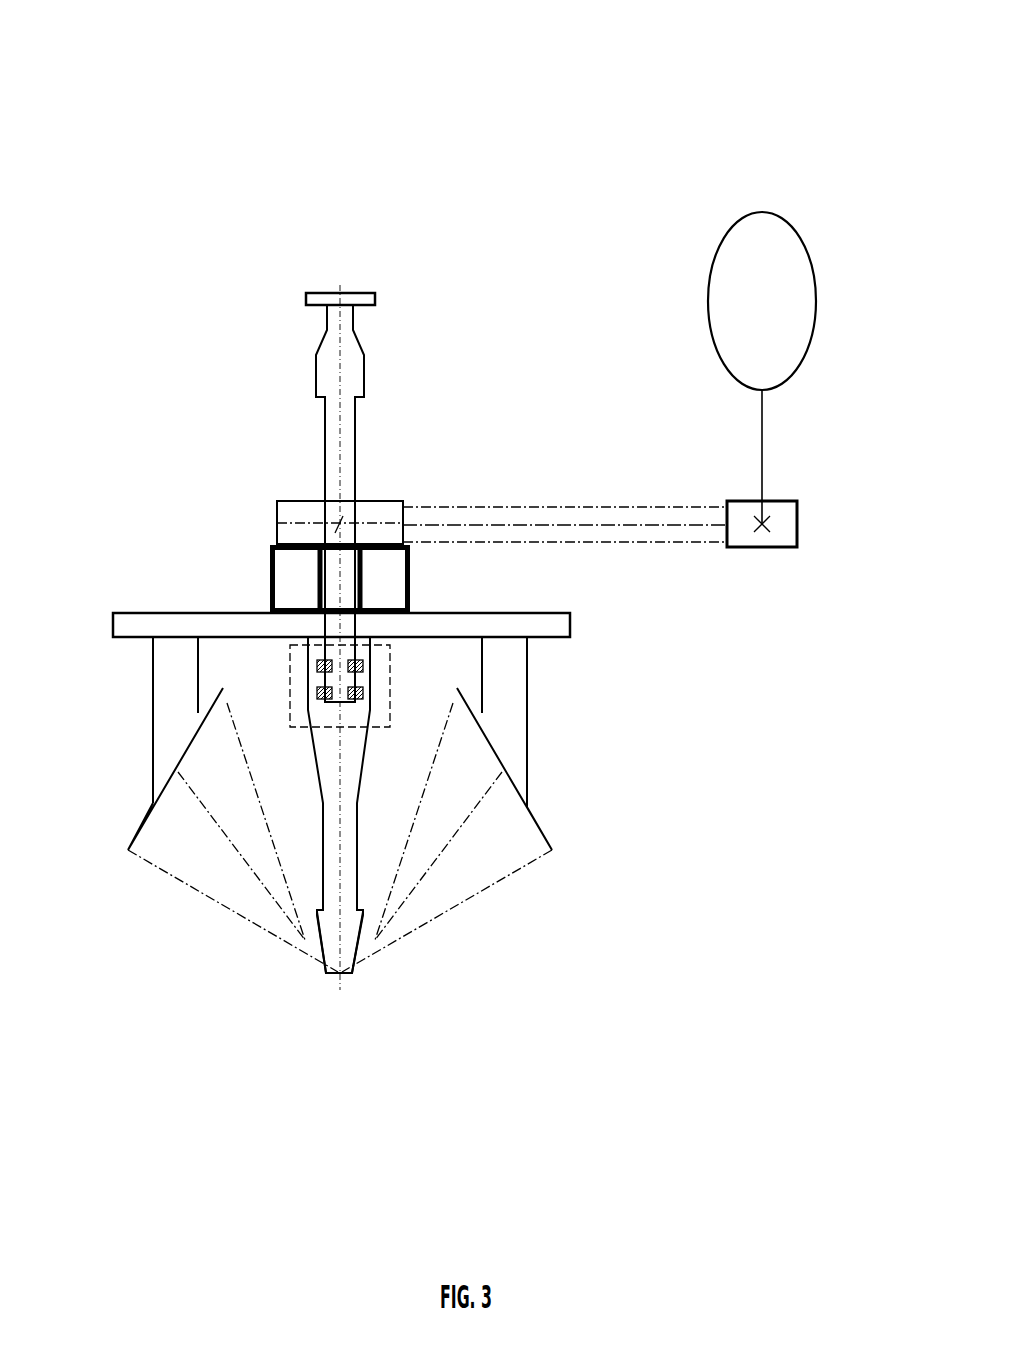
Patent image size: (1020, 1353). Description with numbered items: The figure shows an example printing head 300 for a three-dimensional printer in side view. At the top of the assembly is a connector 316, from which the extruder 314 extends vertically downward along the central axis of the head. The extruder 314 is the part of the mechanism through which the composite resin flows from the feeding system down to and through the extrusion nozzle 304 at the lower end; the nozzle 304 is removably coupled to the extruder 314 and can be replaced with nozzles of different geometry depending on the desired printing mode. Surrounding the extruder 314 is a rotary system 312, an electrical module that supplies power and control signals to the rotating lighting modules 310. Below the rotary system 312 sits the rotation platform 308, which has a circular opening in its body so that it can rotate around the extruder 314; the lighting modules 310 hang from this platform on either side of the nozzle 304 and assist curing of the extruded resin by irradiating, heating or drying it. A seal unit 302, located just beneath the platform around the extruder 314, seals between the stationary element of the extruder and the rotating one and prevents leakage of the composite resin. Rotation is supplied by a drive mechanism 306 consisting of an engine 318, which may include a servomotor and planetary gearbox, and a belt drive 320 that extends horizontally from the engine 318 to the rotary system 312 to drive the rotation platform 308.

The printing head 300 is at (628, 68).
The seal unit 302 is at (290, 660).
The nozzle 304 is at (333, 923).
The drive mechanism 306 is at (797, 548).
The rotation platform 308 is at (212, 628).
The lighting module 310 is at (527, 770).
The rotary system 312 is at (297, 580).
The extruder 314 is at (340, 815).
The connector 316 is at (333, 352).
The engine 318 is at (795, 320).
The belt drive 320 is at (572, 490).